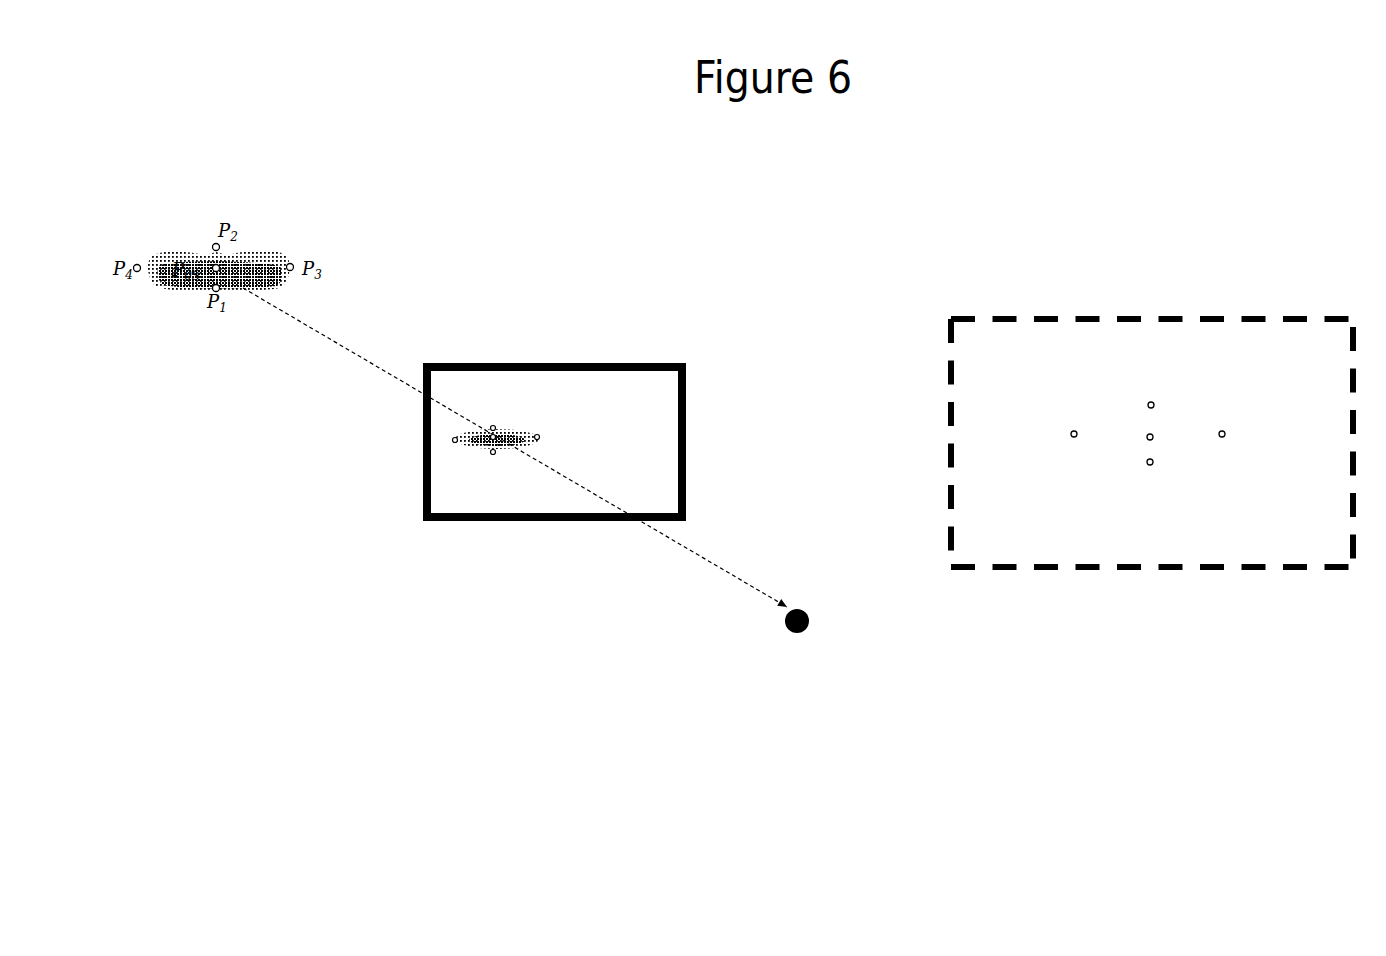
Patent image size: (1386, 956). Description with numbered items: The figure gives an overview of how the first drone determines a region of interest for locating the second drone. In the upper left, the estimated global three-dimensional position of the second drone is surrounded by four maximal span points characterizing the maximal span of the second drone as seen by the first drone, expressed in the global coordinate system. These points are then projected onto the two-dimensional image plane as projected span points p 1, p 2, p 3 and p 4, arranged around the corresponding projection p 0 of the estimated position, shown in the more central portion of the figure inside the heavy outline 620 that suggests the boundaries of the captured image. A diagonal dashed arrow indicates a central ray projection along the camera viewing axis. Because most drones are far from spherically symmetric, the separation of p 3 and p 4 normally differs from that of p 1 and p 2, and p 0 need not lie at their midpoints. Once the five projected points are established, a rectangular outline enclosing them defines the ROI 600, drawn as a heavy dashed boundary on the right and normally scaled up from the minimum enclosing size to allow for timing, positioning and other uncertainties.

The ROI 600 is at (1013, 319).
The heavy outline 620 is at (590, 363).
The central marker point p0 0 is at (1137, 432).
The marker point p1 1 is at (1143, 472).
The marker point p2 2 is at (1162, 390).
The marker point p3 3 is at (1238, 446).
The marker point p4 4 is at (1065, 445).